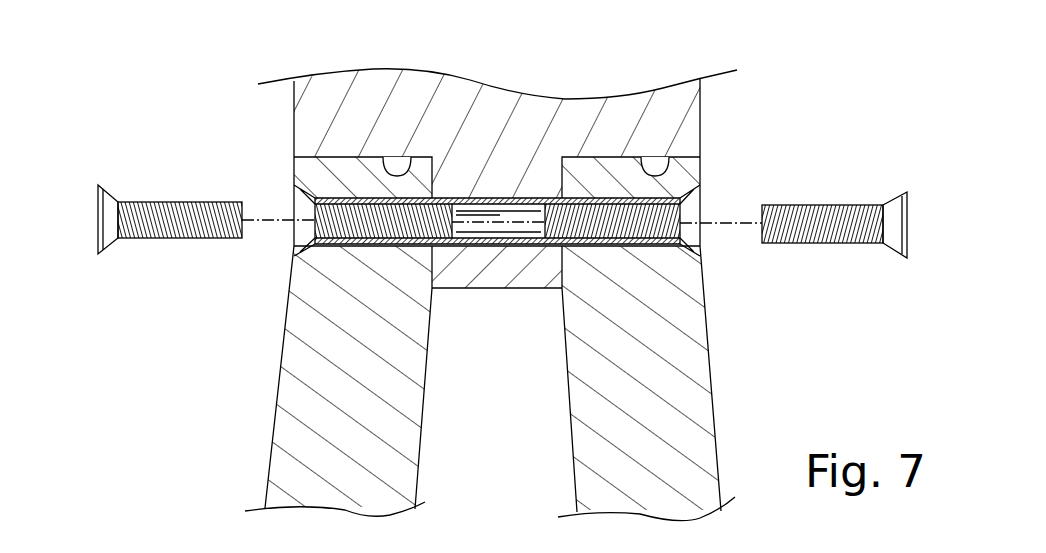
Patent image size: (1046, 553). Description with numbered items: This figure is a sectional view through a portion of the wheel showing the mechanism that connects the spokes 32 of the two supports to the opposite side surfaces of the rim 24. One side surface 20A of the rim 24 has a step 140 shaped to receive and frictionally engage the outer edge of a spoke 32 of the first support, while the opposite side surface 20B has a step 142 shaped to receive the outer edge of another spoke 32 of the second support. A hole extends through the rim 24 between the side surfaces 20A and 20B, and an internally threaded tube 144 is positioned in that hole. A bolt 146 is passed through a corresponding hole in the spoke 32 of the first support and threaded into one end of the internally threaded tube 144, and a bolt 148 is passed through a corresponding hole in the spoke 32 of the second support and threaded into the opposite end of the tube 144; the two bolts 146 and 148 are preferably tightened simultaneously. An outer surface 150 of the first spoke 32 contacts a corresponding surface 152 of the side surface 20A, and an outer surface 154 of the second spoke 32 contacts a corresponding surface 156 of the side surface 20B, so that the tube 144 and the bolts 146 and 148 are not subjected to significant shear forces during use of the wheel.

The rim 24 is at (801, 58).
The side surface 20A is at (294, 121).
The side surface 20B is at (700, 134).
The spoke 32 is at (278, 400).
The step 140 is at (250, 260).
The step 142 is at (716, 273).
The internally threaded tube 144 is at (494, 200).
The bolt 146 is at (152, 200).
The bolt 148 is at (832, 204).
The outer surface 150 is at (400, 163).
The surface 152 is at (338, 157).
The outer surface 154 is at (662, 162).
The surface 156 is at (604, 157).